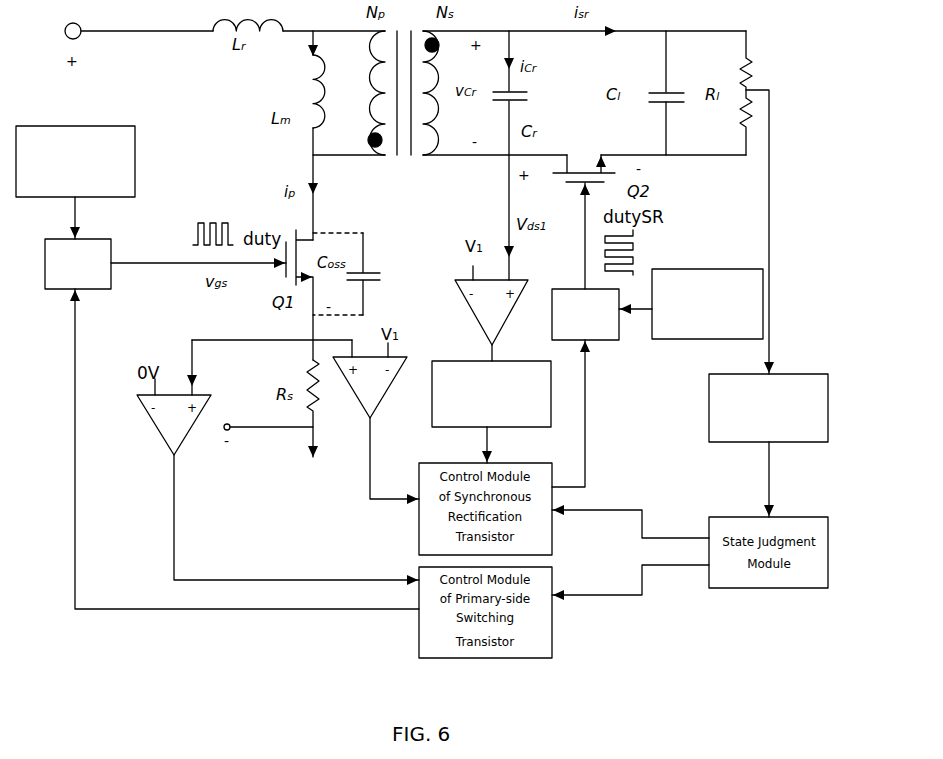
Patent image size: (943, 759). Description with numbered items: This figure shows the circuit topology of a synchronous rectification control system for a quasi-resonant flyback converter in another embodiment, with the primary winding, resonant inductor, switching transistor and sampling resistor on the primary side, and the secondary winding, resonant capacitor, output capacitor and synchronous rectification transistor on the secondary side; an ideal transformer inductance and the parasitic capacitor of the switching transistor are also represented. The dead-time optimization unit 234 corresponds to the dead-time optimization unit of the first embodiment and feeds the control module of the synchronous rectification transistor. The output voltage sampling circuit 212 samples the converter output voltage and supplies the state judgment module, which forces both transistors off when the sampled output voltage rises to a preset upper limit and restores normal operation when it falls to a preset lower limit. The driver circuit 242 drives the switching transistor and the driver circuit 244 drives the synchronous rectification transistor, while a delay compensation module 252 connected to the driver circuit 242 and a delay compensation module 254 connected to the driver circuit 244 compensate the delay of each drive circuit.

The delay compensation module 252 is at (135, 127).
The driver circuit 242 is at (88, 239).
The driver circuit 244 is at (578, 289).
The dead-time optimization unit 234 is at (465, 361).
The delay compensation module 254 is at (668, 269).
The output voltage sampling circuit 212 is at (724, 374).